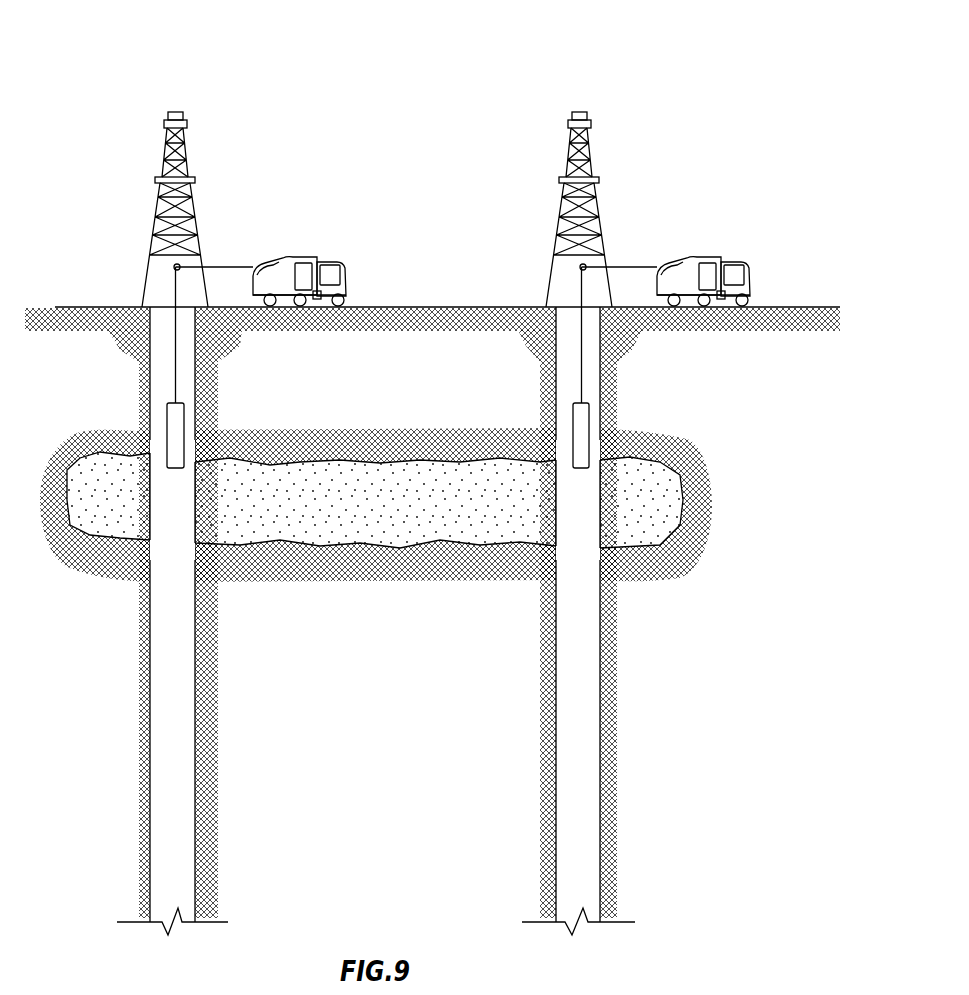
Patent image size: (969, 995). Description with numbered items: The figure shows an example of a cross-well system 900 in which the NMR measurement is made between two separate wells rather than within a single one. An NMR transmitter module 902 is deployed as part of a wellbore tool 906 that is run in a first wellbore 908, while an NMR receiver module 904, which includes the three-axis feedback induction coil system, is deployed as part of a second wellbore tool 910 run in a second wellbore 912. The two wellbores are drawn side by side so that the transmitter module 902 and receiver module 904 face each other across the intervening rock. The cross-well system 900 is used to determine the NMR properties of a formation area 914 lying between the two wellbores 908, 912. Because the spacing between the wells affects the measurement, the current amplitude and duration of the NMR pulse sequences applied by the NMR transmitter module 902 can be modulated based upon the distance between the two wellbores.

The cross-well system 900 is at (432, 472).
The NMR transmitter module 902 is at (108, 367).
The wellbore tool 906 is at (168, 420).
The NMR receiver module 904 is at (511, 367).
The second wellbore tool 910 is at (573, 420).
The first wellbore 908 is at (170, 642).
The second wellbore 912 is at (578, 642).
The formation area 914 is at (398, 513).